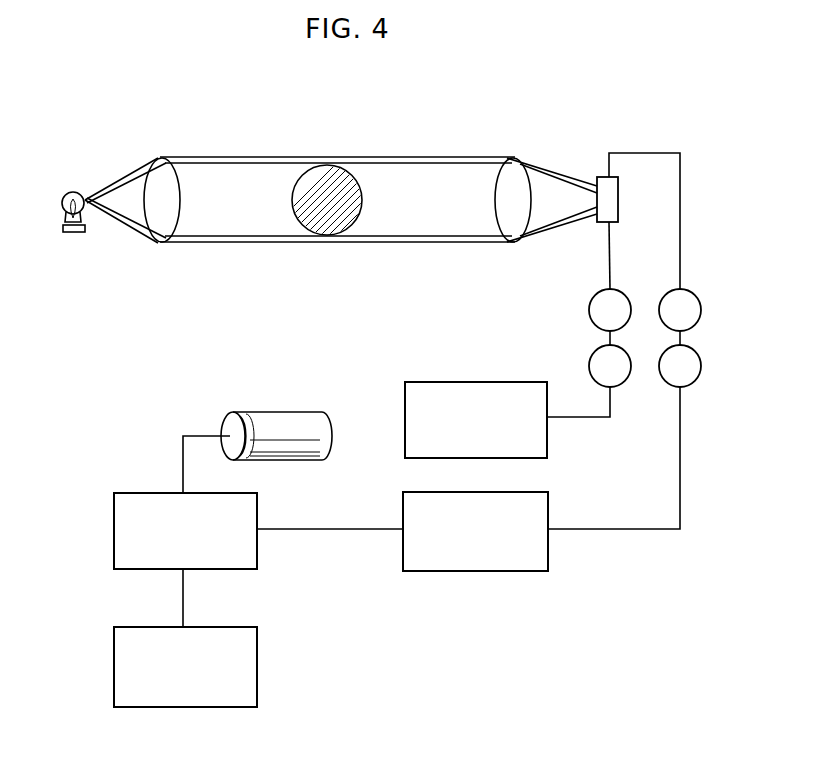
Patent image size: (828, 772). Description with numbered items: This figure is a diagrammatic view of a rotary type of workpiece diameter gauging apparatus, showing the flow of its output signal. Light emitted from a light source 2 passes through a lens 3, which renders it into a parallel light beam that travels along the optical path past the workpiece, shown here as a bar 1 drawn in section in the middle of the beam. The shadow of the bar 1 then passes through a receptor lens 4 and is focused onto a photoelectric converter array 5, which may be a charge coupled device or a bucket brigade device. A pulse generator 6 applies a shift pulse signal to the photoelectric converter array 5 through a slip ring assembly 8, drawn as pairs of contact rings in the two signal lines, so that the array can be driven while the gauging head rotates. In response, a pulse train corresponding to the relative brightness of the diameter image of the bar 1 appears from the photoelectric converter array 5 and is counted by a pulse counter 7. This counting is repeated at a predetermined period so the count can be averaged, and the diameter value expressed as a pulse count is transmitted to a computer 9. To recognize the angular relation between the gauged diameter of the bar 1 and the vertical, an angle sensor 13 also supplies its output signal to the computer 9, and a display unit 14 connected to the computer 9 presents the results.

The bar 1 is at (359, 178).
The light source 2 is at (68, 195).
The lens 3 is at (165, 172).
The receptor lens 4 is at (527, 183).
The photoelectric converter array 5 is at (618, 190).
The pulse generator 6 is at (490, 382).
The pulse counter 7 is at (403, 513).
The slip ring assembly 8 is at (622, 307).
The computer 9 is at (156, 494).
The angle sensor 13 is at (311, 418).
The display unit 14 is at (257, 687).